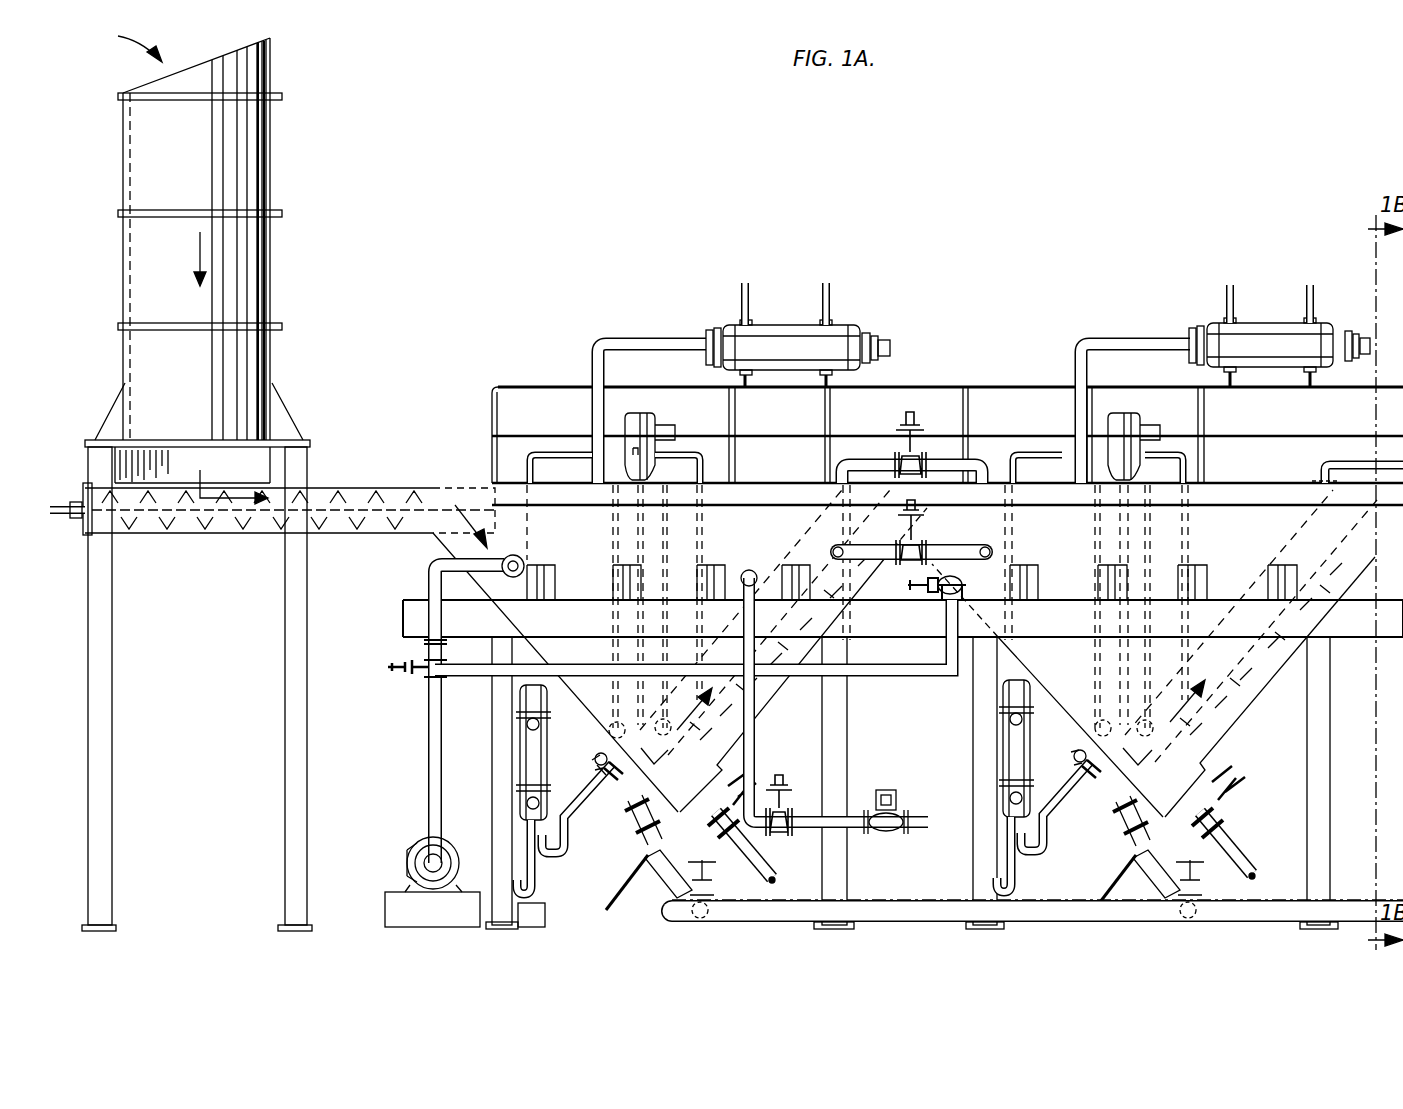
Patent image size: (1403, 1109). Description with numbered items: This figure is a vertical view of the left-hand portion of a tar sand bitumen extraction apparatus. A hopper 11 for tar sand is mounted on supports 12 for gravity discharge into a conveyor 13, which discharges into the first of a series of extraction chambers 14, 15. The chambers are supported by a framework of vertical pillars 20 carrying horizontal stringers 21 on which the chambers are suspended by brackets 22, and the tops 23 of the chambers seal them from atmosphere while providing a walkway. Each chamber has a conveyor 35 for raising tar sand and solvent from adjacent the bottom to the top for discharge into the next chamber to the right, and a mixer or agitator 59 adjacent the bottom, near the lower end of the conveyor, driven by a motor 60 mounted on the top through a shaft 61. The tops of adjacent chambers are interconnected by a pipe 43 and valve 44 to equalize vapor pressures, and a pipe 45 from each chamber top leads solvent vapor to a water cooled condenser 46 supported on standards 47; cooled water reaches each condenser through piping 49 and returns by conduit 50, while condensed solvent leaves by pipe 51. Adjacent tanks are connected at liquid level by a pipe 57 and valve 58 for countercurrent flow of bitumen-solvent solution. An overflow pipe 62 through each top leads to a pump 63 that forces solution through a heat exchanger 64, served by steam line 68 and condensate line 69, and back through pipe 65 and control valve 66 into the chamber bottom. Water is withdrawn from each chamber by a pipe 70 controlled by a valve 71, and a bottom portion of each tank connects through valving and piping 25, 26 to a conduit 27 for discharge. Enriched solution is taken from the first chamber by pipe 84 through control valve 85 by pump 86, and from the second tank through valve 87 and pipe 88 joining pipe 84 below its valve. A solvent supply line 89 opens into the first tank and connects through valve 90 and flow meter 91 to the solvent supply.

The hopper 11 is at (255, 183).
The supports 12 is at (298, 585).
The conveyor 13 is at (350, 495).
The extraction chamber 14 is at (620, 722).
The extraction chamber 15 is at (1045, 712).
The vertical pillars 20 is at (848, 748).
The horizontal stringers 21 is at (1182, 618).
The brackets 22 is at (1210, 568).
The tops 23 is at (1256, 488).
The valving and piping 25 is at (665, 828).
The valving and piping 26 is at (660, 892).
The conduit 27 is at (1277, 902).
The conveyor 35 is at (830, 548).
The pipe 43 is at (845, 468).
The valve 44 is at (912, 448).
The pipe 45 is at (626, 345).
The water cooled condenser 46 is at (782, 333).
The standards 47 is at (742, 430).
The piping 49 is at (742, 298).
The conduit 50 is at (831, 303).
The pipe 51 is at (882, 332).
The pipe 57 is at (960, 546).
The valve 58 is at (915, 545).
The mixer or agitator 59 is at (645, 728).
The motor 60 is at (646, 418).
The shaft 61 is at (645, 622).
The overflow pipe 62 is at (682, 452).
The pump 63 is at (535, 893).
The heat exchanger 64 is at (548, 738).
The pipe 65 is at (570, 822).
The control valve 66 is at (595, 757).
The line 68 is at (1032, 722).
The line 69 is at (1033, 796).
The pipe 70 is at (778, 862).
The valve 71 is at (1215, 815).
The pipe 84 is at (434, 592).
The control valve 85 is at (426, 668).
The pump 86 is at (448, 850).
The valve 87 is at (964, 590).
The pipe 88 is at (893, 668).
The solvent supply line 89 is at (757, 740).
The valve 90 is at (788, 808).
The flow meter 91 is at (898, 812).